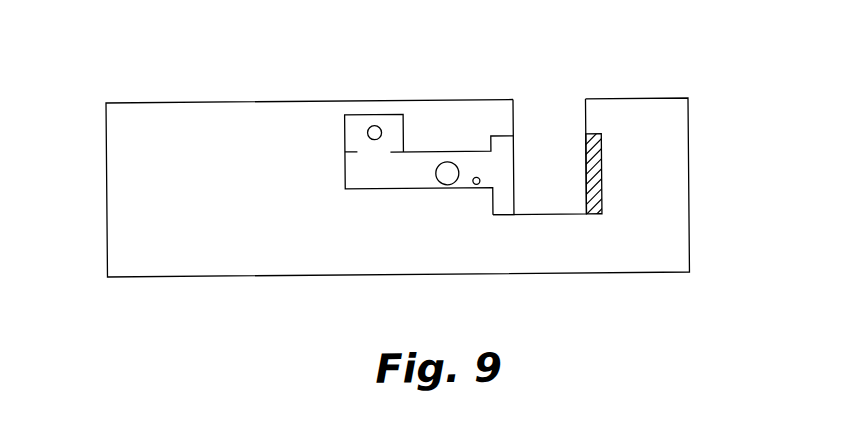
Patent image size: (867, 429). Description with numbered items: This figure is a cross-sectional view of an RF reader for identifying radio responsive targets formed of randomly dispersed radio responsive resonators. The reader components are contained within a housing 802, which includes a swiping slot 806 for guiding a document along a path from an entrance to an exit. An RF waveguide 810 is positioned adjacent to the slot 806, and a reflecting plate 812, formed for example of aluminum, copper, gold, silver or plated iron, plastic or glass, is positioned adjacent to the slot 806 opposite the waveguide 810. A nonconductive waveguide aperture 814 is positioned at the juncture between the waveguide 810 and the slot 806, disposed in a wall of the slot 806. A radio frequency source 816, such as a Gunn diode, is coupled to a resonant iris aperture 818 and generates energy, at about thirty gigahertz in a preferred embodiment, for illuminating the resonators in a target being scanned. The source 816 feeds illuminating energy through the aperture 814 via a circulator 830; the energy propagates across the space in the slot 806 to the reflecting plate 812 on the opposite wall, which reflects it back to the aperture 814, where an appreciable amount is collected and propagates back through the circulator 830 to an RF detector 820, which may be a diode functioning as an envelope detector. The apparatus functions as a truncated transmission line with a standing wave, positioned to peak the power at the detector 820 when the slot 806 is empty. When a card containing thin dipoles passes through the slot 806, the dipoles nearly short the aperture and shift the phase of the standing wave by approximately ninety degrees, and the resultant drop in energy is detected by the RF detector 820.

The housing 802 is at (689, 212).
The swiping slot 806 is at (550, 207).
The RF waveguide 810 is at (450, 154).
The reflecting plate 812 is at (602, 182).
The nonconductive waveguide aperture 814 is at (513, 150).
The radio frequency source 816 is at (373, 128).
The resonant iris aperture 818 is at (355, 150).
The RF detector 820 is at (473, 188).
The circulator 830 is at (439, 184).